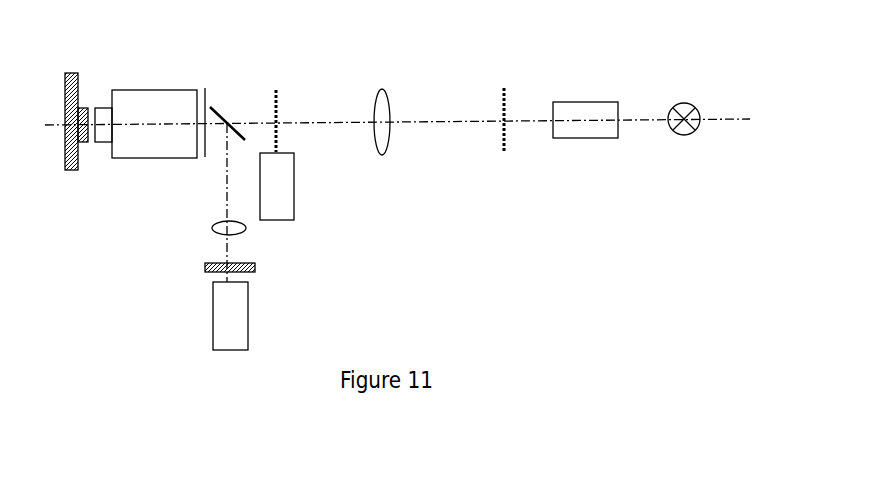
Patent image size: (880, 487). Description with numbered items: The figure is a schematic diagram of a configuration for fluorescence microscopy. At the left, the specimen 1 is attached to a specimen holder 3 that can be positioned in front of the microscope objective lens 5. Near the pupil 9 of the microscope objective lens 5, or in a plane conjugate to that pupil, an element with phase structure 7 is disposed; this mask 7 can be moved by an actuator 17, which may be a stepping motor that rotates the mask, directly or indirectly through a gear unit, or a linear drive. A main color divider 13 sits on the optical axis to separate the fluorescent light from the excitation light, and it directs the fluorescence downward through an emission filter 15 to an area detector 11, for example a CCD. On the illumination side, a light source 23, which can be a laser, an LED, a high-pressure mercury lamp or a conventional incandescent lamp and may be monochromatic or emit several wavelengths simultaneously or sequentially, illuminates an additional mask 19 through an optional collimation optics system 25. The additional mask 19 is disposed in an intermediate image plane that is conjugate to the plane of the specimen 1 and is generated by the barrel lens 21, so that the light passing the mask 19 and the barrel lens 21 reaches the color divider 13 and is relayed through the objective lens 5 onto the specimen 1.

The specimen 1 is at (86, 108).
The specimen holder 3 is at (72, 155).
The microscope objective lens 5 is at (145, 108).
The element with phase structure 7 is at (282, 102).
The pupil 9 is at (210, 95).
The area detector 11 is at (230, 315).
The main color divider 13 is at (226, 116).
The emission filter 15 is at (252, 268).
The actuator 17 is at (283, 190).
The additional mask 19 is at (507, 100).
The barrel lens 21 is at (385, 107).
The light source 23 is at (683, 103).
The collimation optics system 25 is at (590, 127).